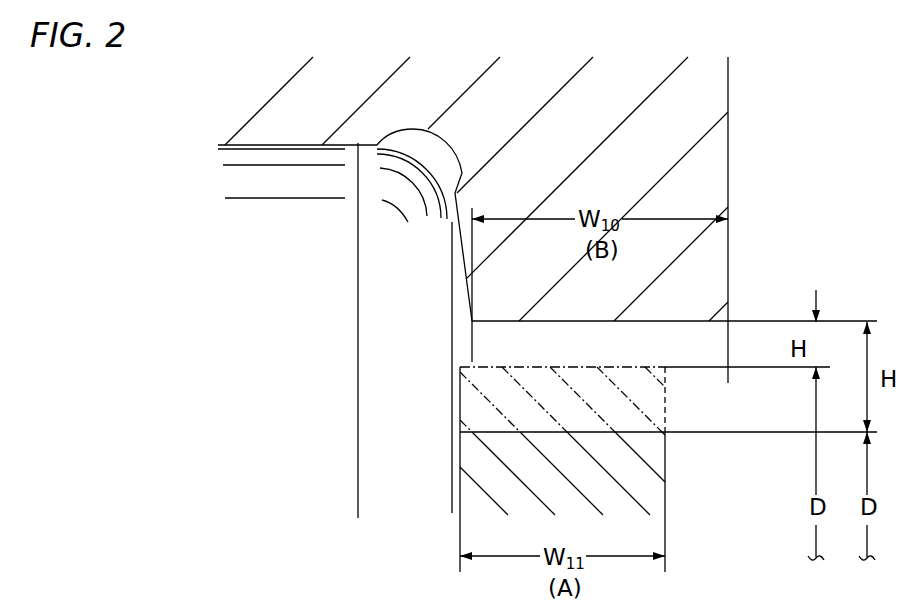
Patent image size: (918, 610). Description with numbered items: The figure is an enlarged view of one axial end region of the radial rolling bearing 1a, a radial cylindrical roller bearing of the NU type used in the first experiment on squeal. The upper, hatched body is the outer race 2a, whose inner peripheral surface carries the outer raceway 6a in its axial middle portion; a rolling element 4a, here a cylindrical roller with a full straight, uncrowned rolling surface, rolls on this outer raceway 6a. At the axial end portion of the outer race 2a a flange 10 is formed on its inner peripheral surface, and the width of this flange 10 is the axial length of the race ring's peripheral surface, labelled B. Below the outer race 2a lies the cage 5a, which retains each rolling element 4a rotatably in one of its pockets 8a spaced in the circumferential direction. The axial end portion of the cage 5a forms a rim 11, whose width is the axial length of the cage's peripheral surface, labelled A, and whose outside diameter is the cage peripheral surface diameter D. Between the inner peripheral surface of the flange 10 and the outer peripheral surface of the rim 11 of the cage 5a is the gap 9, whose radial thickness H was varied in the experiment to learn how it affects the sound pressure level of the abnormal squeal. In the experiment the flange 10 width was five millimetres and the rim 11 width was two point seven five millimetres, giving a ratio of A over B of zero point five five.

The radial rolling bearing 1a is at (749, 101).
The outer race 2a is at (716, 171).
The rolling element 4a is at (330, 170).
The outer raceway 6a is at (274, 145).
The pocket 8a is at (458, 442).
The gap 9 is at (643, 352).
The flange 10 is at (717, 250).
The rim 11 is at (630, 462).
The cage 5a is at (655, 500).